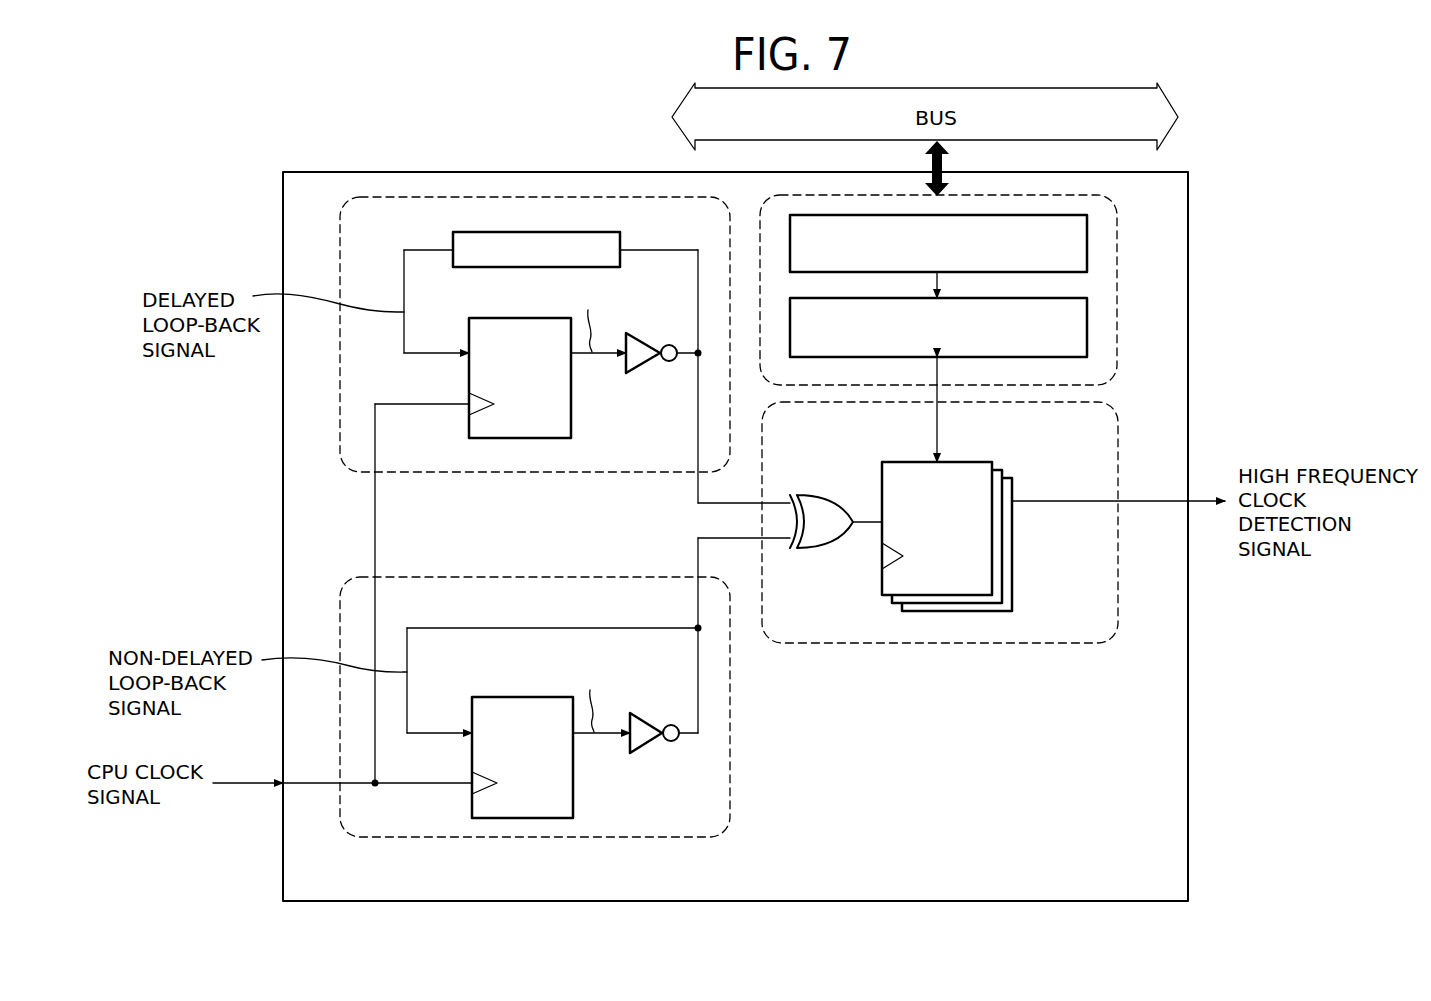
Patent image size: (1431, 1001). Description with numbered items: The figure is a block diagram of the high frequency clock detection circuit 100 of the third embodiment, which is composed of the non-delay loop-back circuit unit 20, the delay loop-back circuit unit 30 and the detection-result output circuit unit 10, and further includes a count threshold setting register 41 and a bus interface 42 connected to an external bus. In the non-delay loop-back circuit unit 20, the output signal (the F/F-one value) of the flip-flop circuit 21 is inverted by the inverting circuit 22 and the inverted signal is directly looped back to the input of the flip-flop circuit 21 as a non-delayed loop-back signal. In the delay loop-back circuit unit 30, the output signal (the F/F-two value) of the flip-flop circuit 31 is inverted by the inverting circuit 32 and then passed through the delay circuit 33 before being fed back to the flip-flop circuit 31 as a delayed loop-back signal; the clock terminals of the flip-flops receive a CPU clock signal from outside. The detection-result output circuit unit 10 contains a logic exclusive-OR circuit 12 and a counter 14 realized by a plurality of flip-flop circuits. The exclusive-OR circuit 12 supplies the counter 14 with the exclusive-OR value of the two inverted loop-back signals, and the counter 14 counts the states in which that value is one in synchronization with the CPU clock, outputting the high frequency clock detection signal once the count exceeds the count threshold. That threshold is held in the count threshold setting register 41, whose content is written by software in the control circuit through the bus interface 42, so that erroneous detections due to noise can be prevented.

The high frequency clock detection circuit 100 is at (1188, 837).
The delay loop-back circuit unit 30 is at (655, 472).
The delay circuit 33 is at (453, 245).
The flip-flop circuit 31 is at (571, 410).
The inverting circuit 32 is at (645, 372).
The non-delay loop-back circuit unit 20 is at (673, 837).
The flip-flop circuit 21 is at (573, 795).
The inverting circuit 22 is at (647, 752).
The bus interface 42 is at (1087, 243).
The count threshold setting register 41 is at (1087, 325).
The detection-result output circuit unit 10 is at (1090, 643).
The logic exclusive-OR circuit 12 is at (815, 548).
The counter 14 is at (1012, 566).